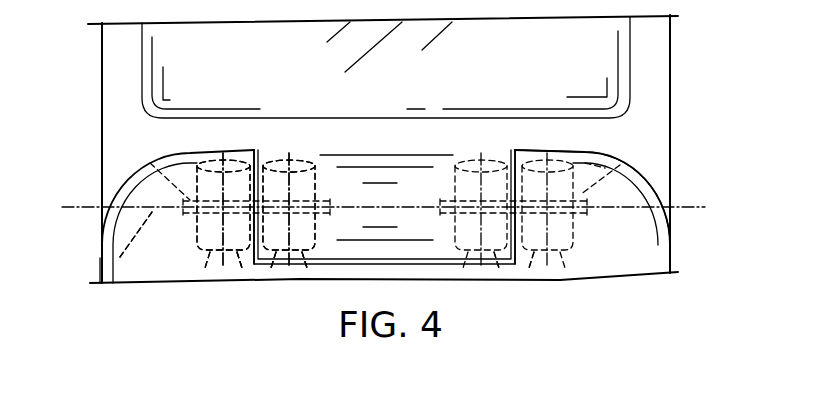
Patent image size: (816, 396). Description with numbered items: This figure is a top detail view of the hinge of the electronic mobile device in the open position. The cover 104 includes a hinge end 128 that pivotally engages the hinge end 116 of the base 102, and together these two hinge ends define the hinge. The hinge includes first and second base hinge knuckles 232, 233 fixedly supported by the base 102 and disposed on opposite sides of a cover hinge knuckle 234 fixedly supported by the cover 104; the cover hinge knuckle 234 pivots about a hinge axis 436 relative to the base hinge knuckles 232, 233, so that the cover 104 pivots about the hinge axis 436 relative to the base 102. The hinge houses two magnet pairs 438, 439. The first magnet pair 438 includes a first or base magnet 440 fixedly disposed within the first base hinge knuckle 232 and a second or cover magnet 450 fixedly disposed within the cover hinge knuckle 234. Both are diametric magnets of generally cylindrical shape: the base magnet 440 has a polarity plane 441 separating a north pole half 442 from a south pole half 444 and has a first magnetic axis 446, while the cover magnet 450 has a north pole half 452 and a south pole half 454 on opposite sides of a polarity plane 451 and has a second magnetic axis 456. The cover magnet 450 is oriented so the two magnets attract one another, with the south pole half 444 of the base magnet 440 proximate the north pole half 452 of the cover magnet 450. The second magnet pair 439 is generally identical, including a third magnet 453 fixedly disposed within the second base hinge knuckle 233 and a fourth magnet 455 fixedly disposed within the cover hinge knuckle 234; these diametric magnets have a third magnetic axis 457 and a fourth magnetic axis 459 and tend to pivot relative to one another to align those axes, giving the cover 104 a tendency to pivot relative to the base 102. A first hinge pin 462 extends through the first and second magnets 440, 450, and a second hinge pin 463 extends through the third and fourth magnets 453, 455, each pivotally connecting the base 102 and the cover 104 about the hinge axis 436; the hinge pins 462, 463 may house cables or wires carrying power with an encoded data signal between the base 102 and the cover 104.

The base 102 is at (628, 270).
The cover 104 is at (657, 58).
The hinge end 116 is at (684, 257).
The hinge end 128 is at (677, 176).
The first base hinge knuckle 232 is at (150, 167).
The second base hinge knuckle 233 is at (653, 192).
The cover hinge knuckle 234 is at (450, 255).
The hinge axis 436 is at (108, 265).
The first magnet pair 438 is at (255, 142).
The second magnet pair 439 is at (519, 142).
The first magnet 440 is at (203, 272).
The polarity plane 441 is at (222, 148).
The first magnetic axis 446 is at (223, 210).
The north pole half 442 is at (208, 250).
The south pole half 444 is at (241, 270).
The second magnet 450 is at (299, 270).
The polarity plane 451 is at (325, 110).
The second magnetic axis 456 is at (289, 210).
The north pole half 452 is at (276, 270).
The third magnet 453 is at (535, 268).
The south pole half 454 is at (304, 258).
The fourth magnet 455 is at (496, 266).
The third magnetic axis 457 is at (548, 148).
The fourth magnetic axis 459 is at (480, 148).
The first hinge pin 462 is at (150, 163).
The second hinge pin 463 is at (620, 165).